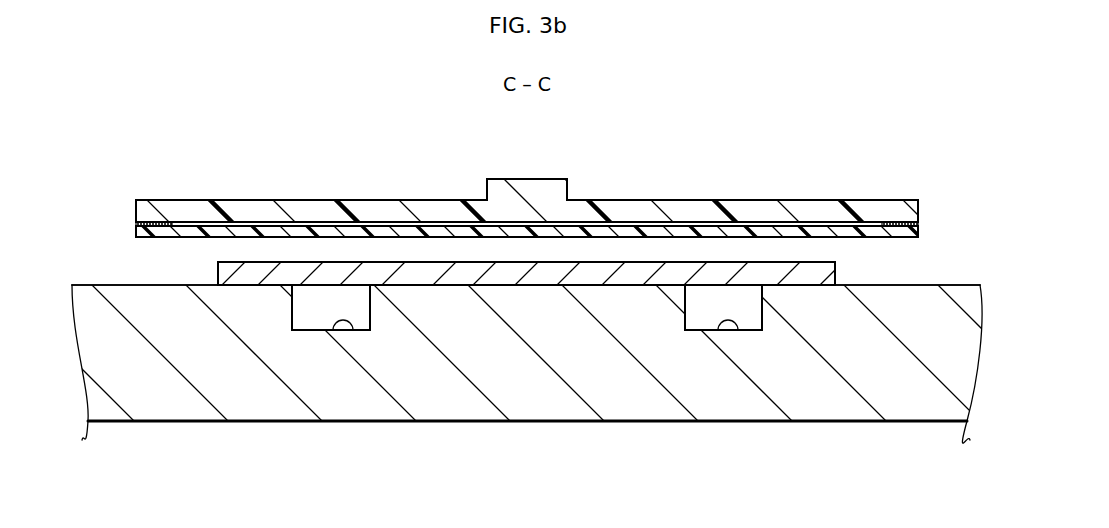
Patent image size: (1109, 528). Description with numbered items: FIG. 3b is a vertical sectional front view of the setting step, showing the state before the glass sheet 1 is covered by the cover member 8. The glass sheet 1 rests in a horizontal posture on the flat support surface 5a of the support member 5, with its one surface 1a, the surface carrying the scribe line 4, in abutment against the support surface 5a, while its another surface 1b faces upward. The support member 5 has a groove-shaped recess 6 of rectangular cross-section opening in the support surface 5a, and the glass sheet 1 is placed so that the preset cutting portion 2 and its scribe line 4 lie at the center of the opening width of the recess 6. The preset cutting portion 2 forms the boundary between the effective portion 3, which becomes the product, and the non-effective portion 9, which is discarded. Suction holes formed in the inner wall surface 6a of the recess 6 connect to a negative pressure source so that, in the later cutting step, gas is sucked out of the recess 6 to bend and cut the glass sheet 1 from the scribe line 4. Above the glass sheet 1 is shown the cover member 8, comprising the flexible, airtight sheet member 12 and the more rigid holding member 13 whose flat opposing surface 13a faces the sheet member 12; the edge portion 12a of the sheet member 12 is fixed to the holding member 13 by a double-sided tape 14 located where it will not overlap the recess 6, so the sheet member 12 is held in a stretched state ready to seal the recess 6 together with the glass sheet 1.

The glass sheet 1 is at (838, 270).
The one surface 1a is at (540, 285).
The another surface 1b is at (555, 262).
The preset cutting portion 2 is at (330, 280).
The effective portion 3 is at (460, 273).
The scribe line 4 is at (331, 286).
The support member 5 is at (921, 427).
The support surface 5a is at (947, 285).
The recess 6 is at (317, 341).
The inner wall surface 6a is at (353, 331).
The cover member 8 is at (525, 190).
The non-effective portion 9 is at (237, 285).
The sheet member 12 is at (134, 229).
The edge portion 12a is at (160, 239).
The holding member 13 is at (135, 212).
The opposing surface 13a is at (452, 223).
The double-sided tape 14 is at (156, 222).